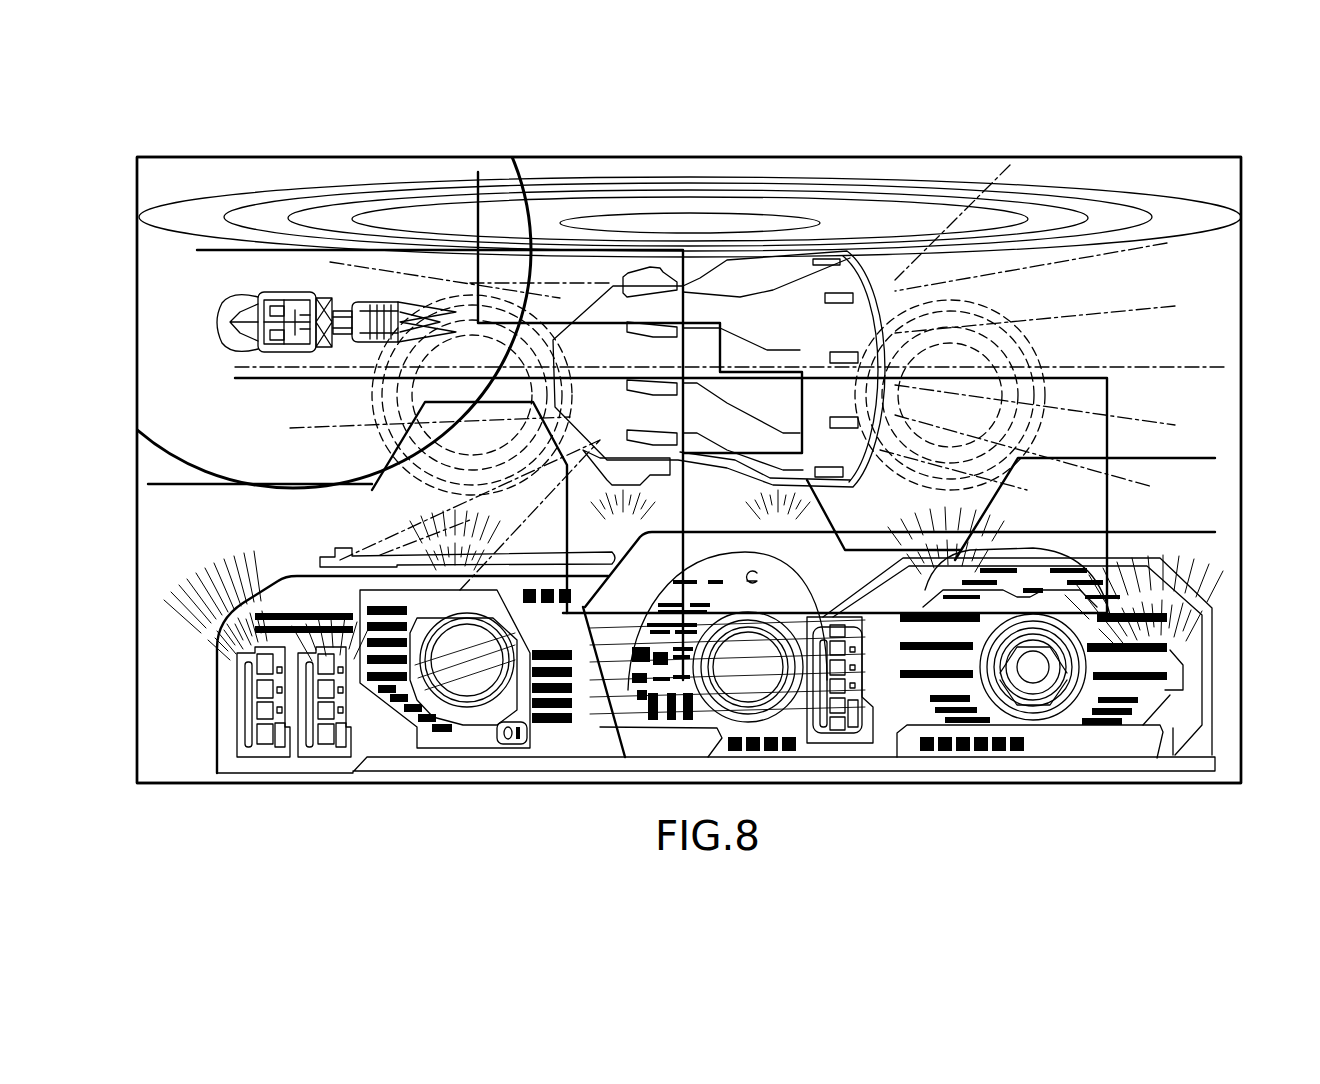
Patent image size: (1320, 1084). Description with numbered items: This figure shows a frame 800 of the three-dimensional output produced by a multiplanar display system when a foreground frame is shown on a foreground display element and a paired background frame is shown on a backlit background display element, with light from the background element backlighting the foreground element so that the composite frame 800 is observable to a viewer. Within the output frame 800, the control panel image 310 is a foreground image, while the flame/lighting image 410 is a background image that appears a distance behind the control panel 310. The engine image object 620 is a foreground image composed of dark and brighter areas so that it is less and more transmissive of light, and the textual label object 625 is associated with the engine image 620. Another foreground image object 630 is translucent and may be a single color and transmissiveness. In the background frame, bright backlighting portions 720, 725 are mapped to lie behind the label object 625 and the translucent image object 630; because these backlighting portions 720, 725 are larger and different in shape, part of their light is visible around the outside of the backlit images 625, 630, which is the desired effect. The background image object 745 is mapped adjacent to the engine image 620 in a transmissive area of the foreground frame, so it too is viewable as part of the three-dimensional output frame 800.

The 3D output frame 800 is at (1256, 187).
The control panel image 310 is at (1172, 790).
The translucent image object 630 is at (176, 348).
The backlighting portion 725 is at (272, 431).
The background image object 745 is at (944, 362).
The backlighting portion 720 is at (1126, 345).
The textual label object 625 is at (1122, 300).
The engine image object 620 is at (706, 274).
The flame/lighting image 410 is at (1216, 657).